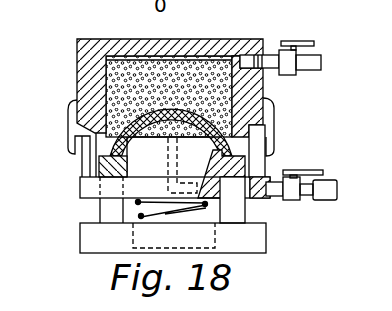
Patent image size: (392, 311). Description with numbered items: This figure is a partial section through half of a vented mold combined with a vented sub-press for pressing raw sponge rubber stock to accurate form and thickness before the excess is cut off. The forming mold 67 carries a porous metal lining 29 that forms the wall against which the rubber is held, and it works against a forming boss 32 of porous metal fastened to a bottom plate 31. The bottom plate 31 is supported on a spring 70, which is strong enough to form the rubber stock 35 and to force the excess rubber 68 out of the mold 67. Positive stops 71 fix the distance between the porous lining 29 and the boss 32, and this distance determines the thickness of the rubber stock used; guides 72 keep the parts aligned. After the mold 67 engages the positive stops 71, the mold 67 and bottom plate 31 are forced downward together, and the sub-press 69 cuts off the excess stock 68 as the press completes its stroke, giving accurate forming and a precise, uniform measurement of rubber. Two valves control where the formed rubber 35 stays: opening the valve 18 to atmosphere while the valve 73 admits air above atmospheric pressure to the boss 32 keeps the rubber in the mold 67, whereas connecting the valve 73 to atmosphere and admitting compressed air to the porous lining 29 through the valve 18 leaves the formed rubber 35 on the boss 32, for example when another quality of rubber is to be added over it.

The valve 18 is at (295, 38).
The porous metal lining 29 is at (105, 80).
The bottom plate 31 is at (40, 190).
The forming boss 32 is at (170, 165).
The formed rubber stock 35 is at (240, 99).
The forming mold 67 is at (198, 43).
The excess rubber 68 is at (220, 148).
The sub-press 69 is at (250, 165).
The spring 70 is at (137, 205).
The positive stops 71 is at (88, 163).
The guides 72 is at (70, 127).
The valve 73 is at (322, 171).